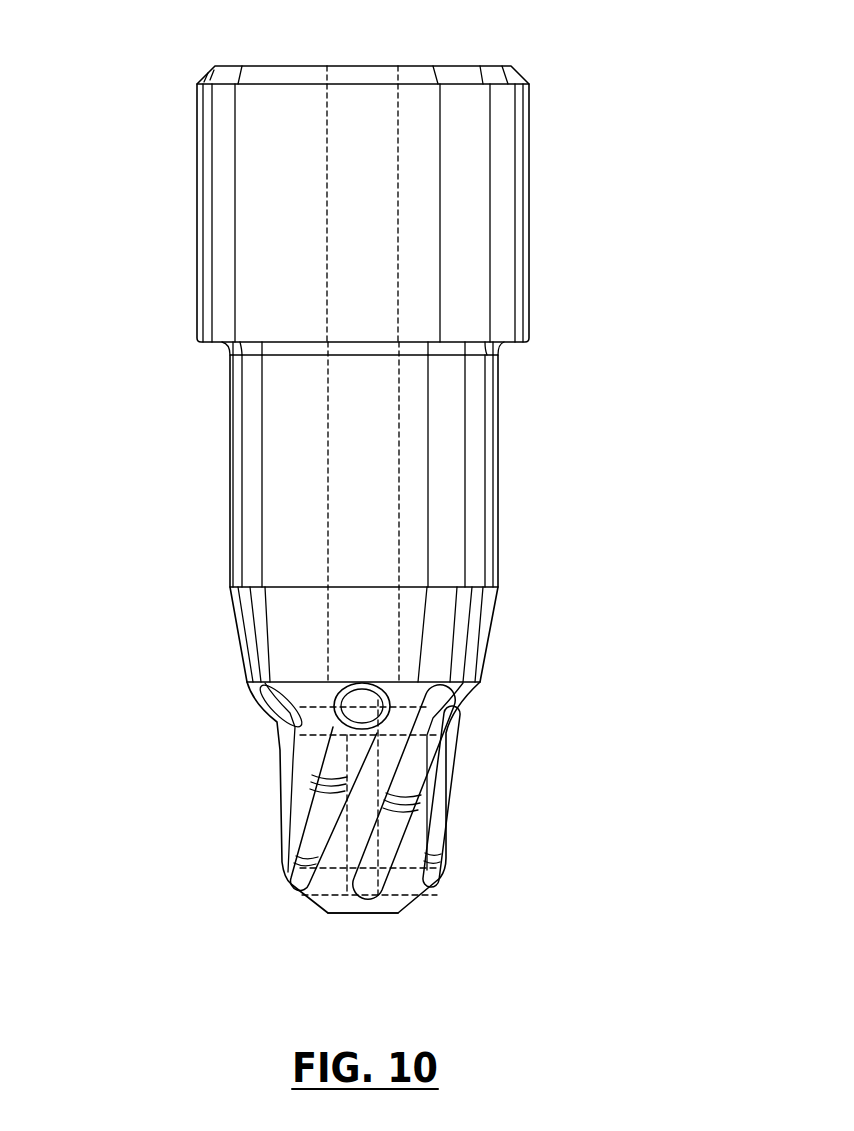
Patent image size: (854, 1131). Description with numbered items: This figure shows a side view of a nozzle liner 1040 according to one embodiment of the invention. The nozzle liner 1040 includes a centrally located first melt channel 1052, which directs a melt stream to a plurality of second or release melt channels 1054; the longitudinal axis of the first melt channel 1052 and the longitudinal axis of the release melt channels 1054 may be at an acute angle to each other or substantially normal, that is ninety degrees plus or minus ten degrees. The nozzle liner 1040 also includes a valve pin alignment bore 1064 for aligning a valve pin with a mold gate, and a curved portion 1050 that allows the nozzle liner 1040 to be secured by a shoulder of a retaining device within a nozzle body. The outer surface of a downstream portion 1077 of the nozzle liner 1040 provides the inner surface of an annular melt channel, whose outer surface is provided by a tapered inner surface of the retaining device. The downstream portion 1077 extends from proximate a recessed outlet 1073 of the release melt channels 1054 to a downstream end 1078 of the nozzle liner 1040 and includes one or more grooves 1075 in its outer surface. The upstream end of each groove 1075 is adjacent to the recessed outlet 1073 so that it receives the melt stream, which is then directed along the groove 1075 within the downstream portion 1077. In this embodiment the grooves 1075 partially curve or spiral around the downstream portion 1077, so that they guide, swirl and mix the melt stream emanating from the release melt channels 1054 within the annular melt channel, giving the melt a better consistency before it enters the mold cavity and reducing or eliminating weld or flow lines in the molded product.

The nozzle liner 1040 is at (594, 177).
The curved portion 1050 is at (223, 343).
The first melt channel 1052 is at (335, 510).
The release melt channel 1054 is at (388, 704).
The valve pin alignment bore 1064 is at (374, 763).
The recessed outlet 1073 is at (260, 710).
The groove 1075 is at (433, 798).
The downstream portion 1077 is at (328, 913).
The downstream end 1078 is at (398, 913).